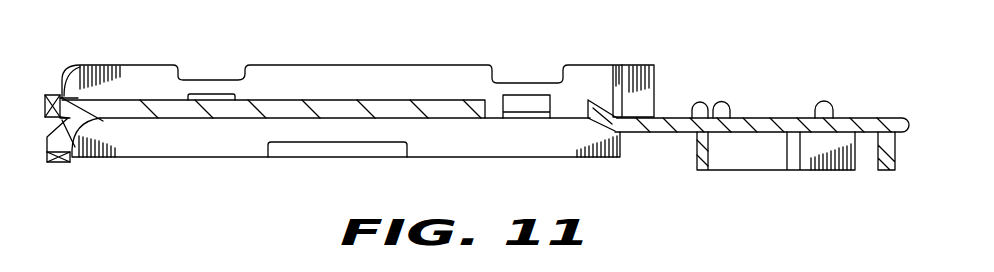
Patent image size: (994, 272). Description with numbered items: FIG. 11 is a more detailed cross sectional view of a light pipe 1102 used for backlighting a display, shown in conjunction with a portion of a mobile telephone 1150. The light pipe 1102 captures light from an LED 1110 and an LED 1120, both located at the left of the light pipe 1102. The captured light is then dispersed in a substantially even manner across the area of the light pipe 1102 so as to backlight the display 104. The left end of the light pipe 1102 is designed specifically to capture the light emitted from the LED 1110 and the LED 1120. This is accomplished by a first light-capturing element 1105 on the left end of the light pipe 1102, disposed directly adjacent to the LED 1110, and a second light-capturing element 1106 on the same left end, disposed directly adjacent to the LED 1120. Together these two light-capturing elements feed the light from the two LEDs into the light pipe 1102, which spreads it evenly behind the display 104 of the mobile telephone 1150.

The display 104 is at (372, 65).
The light pipe 1102 is at (443, 99).
The first light-capturing element 1105 is at (67, 92).
The second light-capturing element 1106 is at (48, 143).
The LED 1110 is at (53, 93).
The LED 1120 is at (70, 160).
The mobile telephone 1150 is at (603, 57).